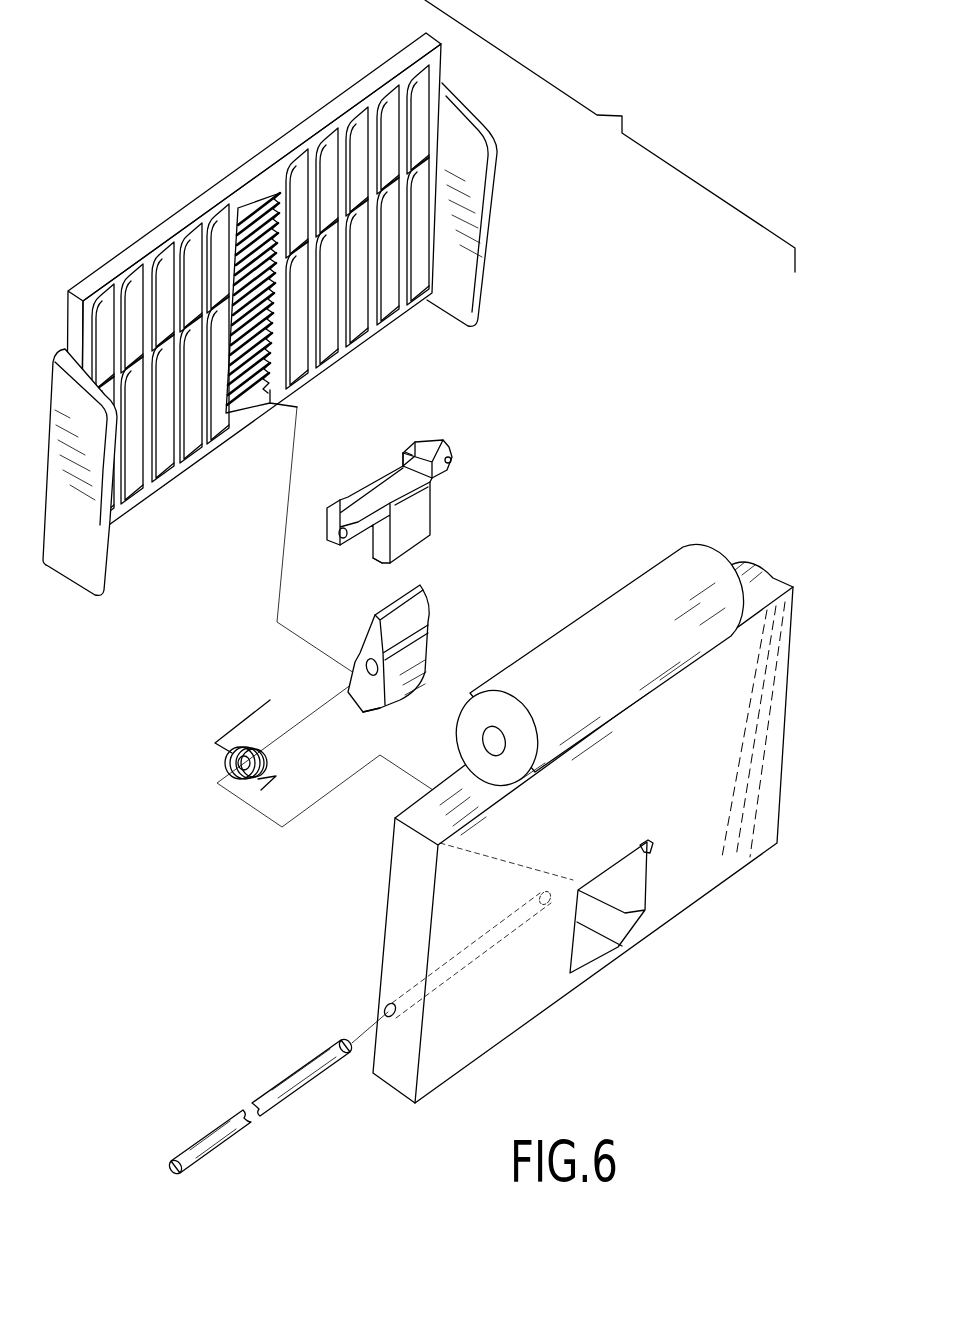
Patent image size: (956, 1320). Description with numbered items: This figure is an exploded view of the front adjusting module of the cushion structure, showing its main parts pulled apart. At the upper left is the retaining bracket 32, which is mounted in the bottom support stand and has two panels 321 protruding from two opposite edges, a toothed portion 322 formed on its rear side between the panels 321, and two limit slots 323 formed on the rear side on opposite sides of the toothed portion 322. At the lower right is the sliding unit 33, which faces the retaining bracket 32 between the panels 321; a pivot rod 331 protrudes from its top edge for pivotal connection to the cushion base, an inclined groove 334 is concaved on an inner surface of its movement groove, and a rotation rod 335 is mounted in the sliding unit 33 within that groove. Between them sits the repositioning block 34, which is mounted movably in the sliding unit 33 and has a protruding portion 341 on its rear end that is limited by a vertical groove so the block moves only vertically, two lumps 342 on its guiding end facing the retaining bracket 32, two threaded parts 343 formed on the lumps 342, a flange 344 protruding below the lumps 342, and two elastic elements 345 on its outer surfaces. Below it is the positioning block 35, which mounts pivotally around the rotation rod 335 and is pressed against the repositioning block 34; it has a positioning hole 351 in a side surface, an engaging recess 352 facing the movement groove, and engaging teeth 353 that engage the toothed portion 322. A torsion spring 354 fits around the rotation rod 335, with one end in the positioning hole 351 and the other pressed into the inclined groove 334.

The retaining bracket 32 is at (307, 314).
The panels 321 is at (477, 288).
The toothed portion 322 is at (262, 197).
The limit slots 323 is at (307, 153).
The sliding unit 33 is at (583, 807).
The pivot rod 331 is at (653, 573).
The inclined groove 334 is at (653, 847).
The rotation rod 335 is at (215, 1132).
The repositioning block 34 is at (422, 498).
The protruding portion 341 is at (425, 515).
The lumps 342 is at (402, 462).
The threaded parts 343 is at (413, 447).
The flange 344 is at (378, 552).
The elastic elements 345 is at (447, 453).
The positioning block 35 is at (325, 678).
The positioning hole 351 is at (378, 695).
The engaging recess 352 is at (413, 635).
The engaging teeth 353 is at (350, 687).
The torsion spring 354 is at (228, 762).